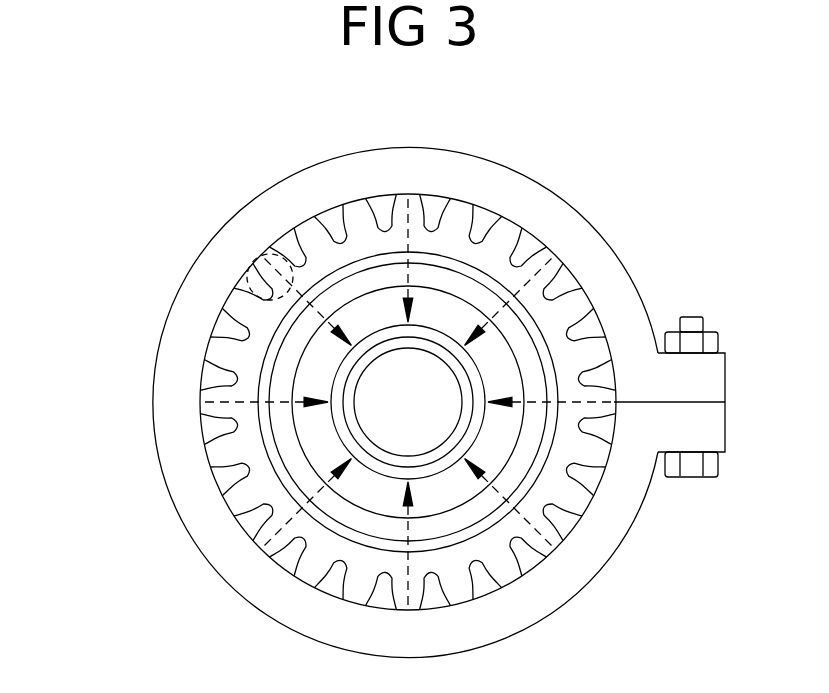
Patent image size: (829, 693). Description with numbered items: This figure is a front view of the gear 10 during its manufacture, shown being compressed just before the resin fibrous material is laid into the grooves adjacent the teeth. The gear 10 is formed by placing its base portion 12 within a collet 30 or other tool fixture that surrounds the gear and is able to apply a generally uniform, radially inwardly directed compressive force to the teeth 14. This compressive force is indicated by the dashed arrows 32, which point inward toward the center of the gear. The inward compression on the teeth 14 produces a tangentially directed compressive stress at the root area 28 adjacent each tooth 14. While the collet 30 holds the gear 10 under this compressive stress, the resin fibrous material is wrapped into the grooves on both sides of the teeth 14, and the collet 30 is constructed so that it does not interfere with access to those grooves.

The gear 10 is at (376, 218).
The base portion 12 is at (488, 443).
The teeth 14 is at (352, 212).
The root area 28 is at (345, 213).
The collet 30 is at (512, 163).
The arrows 32 is at (250, 282).